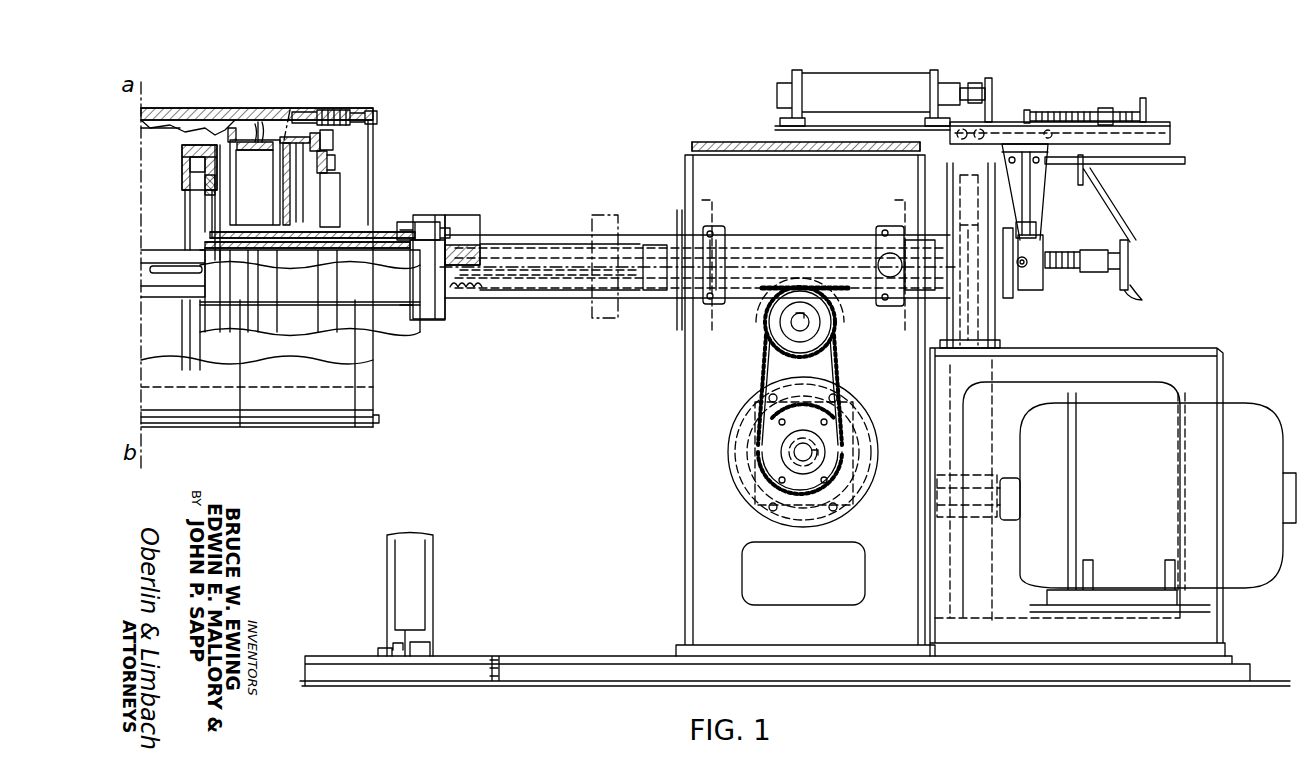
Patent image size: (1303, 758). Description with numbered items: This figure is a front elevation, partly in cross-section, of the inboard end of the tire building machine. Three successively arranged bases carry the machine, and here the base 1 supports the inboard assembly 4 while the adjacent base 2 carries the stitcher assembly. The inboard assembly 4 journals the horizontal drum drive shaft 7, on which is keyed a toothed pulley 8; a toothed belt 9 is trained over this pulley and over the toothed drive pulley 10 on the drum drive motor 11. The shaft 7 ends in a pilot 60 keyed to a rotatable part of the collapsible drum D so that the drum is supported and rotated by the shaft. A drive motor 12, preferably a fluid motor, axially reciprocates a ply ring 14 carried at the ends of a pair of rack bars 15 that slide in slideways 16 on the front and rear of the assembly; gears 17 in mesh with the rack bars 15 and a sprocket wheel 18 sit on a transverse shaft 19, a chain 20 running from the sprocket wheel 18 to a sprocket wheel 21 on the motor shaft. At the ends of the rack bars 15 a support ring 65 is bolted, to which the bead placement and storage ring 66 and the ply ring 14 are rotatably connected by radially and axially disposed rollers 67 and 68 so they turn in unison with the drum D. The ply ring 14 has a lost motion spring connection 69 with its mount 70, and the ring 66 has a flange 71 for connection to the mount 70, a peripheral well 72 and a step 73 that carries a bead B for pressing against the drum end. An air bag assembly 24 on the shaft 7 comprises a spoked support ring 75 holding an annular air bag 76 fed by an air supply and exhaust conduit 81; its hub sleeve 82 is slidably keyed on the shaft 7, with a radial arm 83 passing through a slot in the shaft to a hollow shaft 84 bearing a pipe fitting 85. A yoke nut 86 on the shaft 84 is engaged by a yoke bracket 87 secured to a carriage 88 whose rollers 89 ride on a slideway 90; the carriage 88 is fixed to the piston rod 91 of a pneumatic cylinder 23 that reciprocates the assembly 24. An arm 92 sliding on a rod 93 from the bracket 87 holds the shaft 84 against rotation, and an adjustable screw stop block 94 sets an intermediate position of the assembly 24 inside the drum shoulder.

The base 1 is at (580, 686).
The base 2 is at (428, 680).
The inboard assembly 4 is at (676, 476).
The drum drive shaft 7 is at (697, 288).
The toothed pulley 8 is at (996, 328).
The toothed belt 9 is at (989, 412).
The toothed drive pulley 10 is at (993, 520).
The drum drive motor 11 is at (1245, 420).
The drive motor 12 is at (800, 452).
The ply ring 14 is at (290, 110).
The rack bars 15 is at (482, 298).
The slideways 16 is at (718, 228).
The gears 17 is at (838, 310).
The sprocket wheel 18 is at (796, 327).
The transverse shaft 19 is at (790, 330).
The chain 20 is at (765, 372).
The sprocket wheel 21 is at (775, 466).
The pneumatic cylinder 23 is at (856, 82).
The air bag assembly 24 is at (180, 168).
The pilot 60 is at (158, 298).
The support ring 65 is at (342, 190).
The bead placement and storage ring 66 is at (262, 152).
The radially disposed rollers 67 is at (334, 142).
The axially disposed rollers 68 is at (333, 162).
The lost motion spring connection 69 is at (379, 116).
The mount 70 is at (298, 144).
The flange 71 is at (290, 170).
The peripheral well 72 is at (262, 128).
The step 73 is at (236, 130).
The spoked support ring 75 is at (205, 185).
The air bag 76 is at (198, 145).
The air supply and exhaust conduit 81 is at (205, 235).
The hub sleeve 82 is at (365, 232).
The radial arm 83 is at (447, 230).
The hollow shaft 84 is at (470, 262).
The pipe fitting 85 is at (1132, 258).
The yoke nut 86 is at (1040, 290).
The yoke bracket 87 is at (1036, 195).
The carriage 88 is at (1005, 142).
The rollers 89 is at (992, 140).
The slideway 90 is at (1168, 122).
The piston rod 91 is at (970, 83).
The arm 92 is at (1102, 192).
The rod 93 is at (1172, 164).
The adjustable screw stop block 94 is at (1032, 110).
The collapsible drum D is at (178, 108).
The tire bead B is at (290, 110).